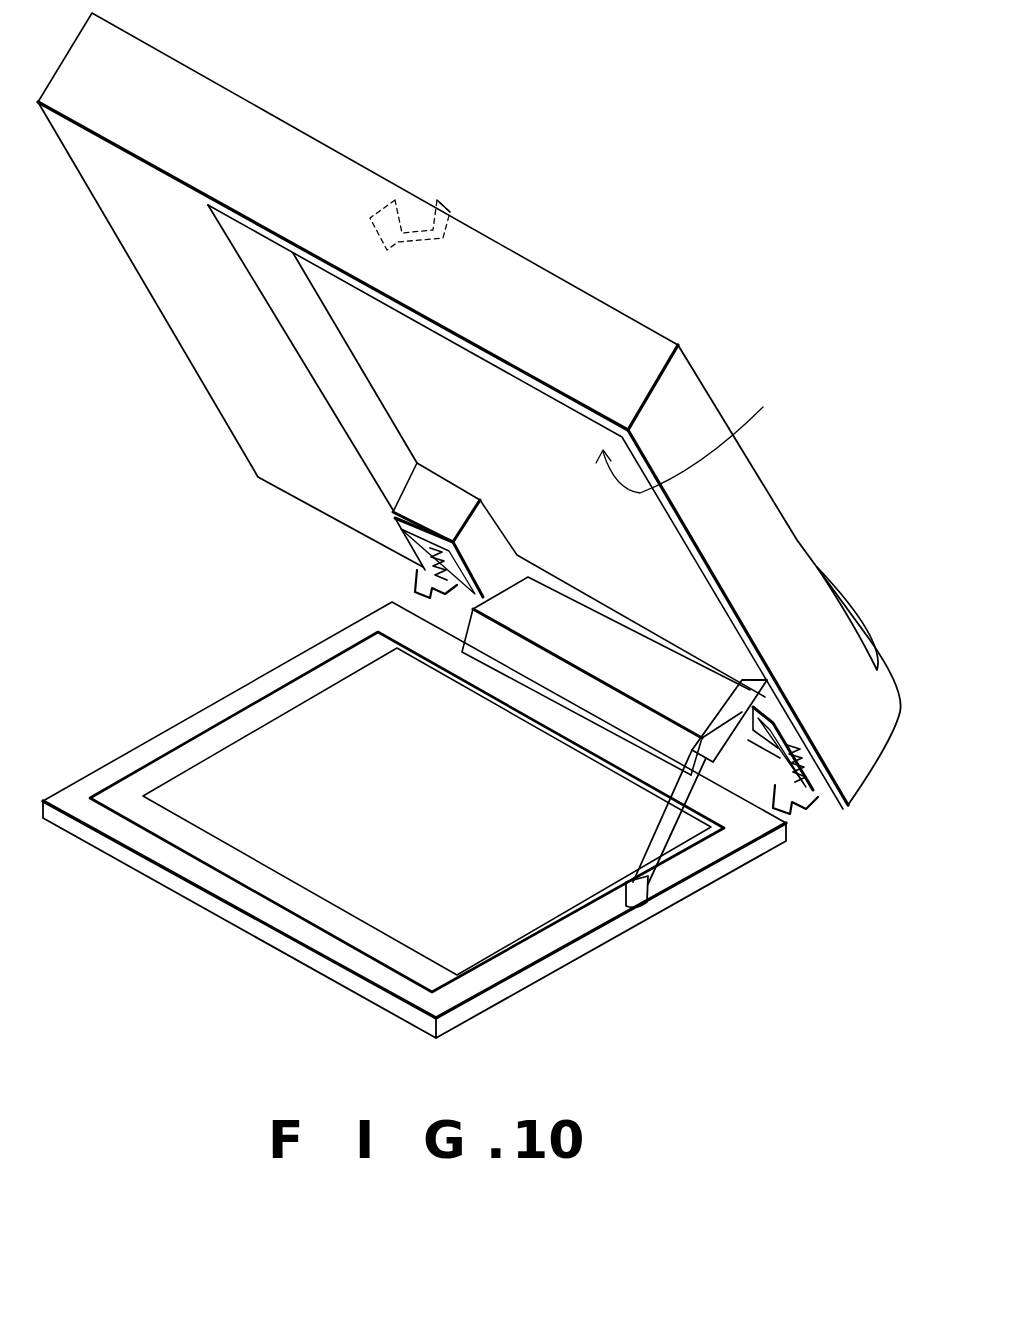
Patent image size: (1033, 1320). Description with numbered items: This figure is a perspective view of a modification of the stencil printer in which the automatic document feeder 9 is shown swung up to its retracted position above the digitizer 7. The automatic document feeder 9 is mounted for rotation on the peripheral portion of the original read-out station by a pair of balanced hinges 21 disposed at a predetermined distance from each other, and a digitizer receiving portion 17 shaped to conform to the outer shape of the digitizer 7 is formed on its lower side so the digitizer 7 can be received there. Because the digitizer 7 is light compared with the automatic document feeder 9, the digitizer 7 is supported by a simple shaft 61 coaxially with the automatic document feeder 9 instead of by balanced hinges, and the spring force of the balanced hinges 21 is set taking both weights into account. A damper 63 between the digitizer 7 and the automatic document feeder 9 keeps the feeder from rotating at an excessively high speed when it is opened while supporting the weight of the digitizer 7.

The digitizer 7 is at (605, 940).
The automatic document feeder 9 is at (752, 492).
The digitizer receiving portion 17 is at (701, 439).
The balanced hinges 21 is at (420, 587).
The shaft 61 is at (470, 606).
The damper 63 is at (656, 858).